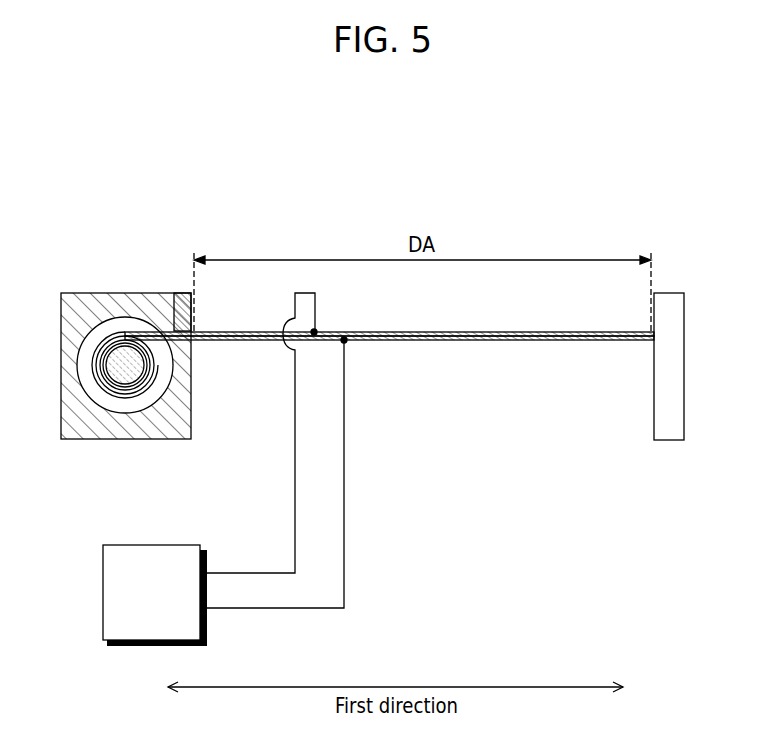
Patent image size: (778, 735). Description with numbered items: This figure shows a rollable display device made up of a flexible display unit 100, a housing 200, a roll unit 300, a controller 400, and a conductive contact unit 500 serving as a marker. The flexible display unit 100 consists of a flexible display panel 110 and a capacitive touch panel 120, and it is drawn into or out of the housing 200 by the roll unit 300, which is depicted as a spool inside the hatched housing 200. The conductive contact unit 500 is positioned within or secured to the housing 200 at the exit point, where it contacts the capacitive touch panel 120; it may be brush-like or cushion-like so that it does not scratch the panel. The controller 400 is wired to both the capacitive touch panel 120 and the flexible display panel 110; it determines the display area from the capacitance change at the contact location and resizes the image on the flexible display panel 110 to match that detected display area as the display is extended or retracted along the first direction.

The flexible display unit 100 is at (389, 386).
The flexible display panel 110 is at (518, 398).
The capacitive touch panel 120 is at (500, 334).
The housing 200 is at (88, 312).
The roll unit 300 is at (130, 375).
The controller 400 is at (103, 594).
The conductive contact unit 500 is at (183, 302).